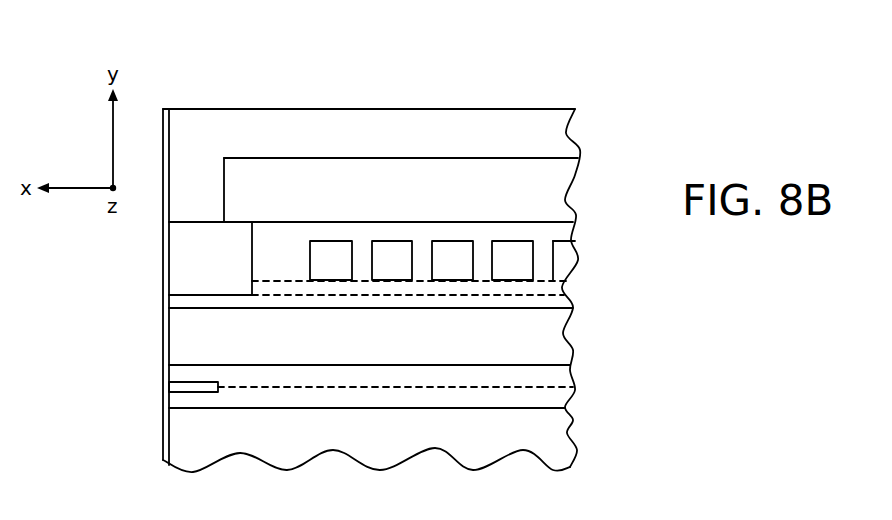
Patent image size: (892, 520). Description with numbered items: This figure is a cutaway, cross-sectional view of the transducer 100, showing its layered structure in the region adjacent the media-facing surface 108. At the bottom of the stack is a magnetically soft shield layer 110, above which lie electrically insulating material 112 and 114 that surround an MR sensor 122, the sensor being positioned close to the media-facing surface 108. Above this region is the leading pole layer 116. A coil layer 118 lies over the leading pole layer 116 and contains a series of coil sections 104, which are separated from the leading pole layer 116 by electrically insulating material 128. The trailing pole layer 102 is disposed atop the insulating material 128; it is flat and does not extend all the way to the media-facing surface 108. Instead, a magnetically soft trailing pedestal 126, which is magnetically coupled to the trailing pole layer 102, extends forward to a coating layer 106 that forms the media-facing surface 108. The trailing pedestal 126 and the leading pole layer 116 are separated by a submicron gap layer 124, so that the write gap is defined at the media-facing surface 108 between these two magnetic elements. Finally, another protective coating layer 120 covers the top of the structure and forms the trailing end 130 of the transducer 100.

The transducer 100 is at (491, 73).
The trailing pole layer 102 is at (545, 200).
The coil sections 104 is at (397, 267).
The coating layer 106 is at (165, 443).
The media-facing surface 108 is at (150, 407).
The magnetically soft shield layer 110 is at (560, 435).
The electrically insulating material 112 is at (560, 402).
The electrically insulating material 114 is at (555, 373).
The leading pole layer 116 is at (545, 350).
The coil layer 118 is at (597, 271).
The protective coating layer 120 is at (545, 143).
The MR sensor 122 is at (177, 387).
The submicron gap layer 124 is at (175, 302).
The trailing pedestal 126 is at (201, 235).
The electrically insulating material 128 is at (277, 290).
The trailing end 130 is at (336, 103).